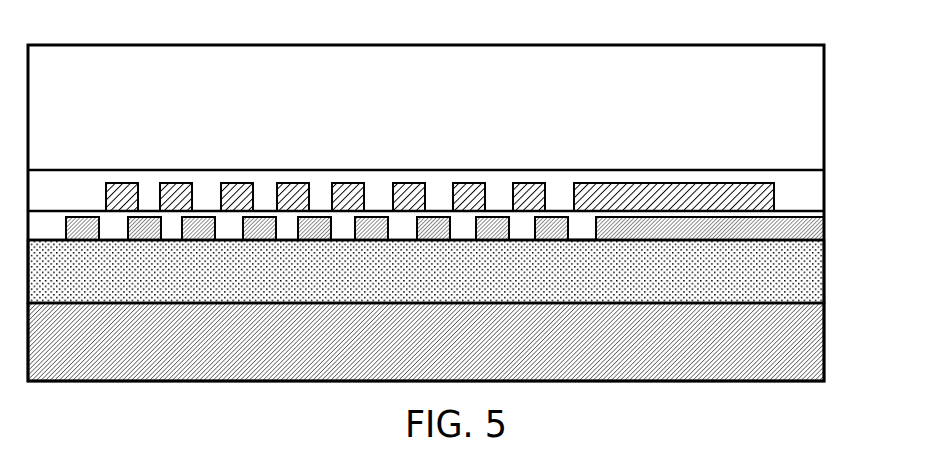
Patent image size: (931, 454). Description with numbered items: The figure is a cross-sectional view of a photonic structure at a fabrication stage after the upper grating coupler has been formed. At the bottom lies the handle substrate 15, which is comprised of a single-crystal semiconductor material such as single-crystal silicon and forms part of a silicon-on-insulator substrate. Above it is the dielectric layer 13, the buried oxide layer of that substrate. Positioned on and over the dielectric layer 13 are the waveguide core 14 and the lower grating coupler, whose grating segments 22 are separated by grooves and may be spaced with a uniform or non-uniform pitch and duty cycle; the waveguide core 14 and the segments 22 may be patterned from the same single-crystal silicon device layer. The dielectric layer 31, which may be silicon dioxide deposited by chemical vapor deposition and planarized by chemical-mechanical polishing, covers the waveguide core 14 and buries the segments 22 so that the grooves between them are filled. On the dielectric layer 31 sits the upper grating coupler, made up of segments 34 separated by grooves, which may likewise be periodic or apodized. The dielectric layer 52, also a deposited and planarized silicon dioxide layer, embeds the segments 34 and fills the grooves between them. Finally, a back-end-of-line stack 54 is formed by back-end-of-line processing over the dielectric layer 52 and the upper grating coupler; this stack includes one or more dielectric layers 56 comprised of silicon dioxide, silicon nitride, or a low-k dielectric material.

The dielectric layer 13 is at (800, 273).
The waveguide core 14 is at (807, 232).
The handle substrate 15 is at (800, 345).
The segments 22 is at (83, 227).
The dielectric layer 31 is at (585, 229).
The segments 34 is at (177, 203).
The dielectric layer 52 is at (791, 197).
The back-end-of-line stack 54 is at (834, 61).
The dielectric layers 56 is at (791, 110).